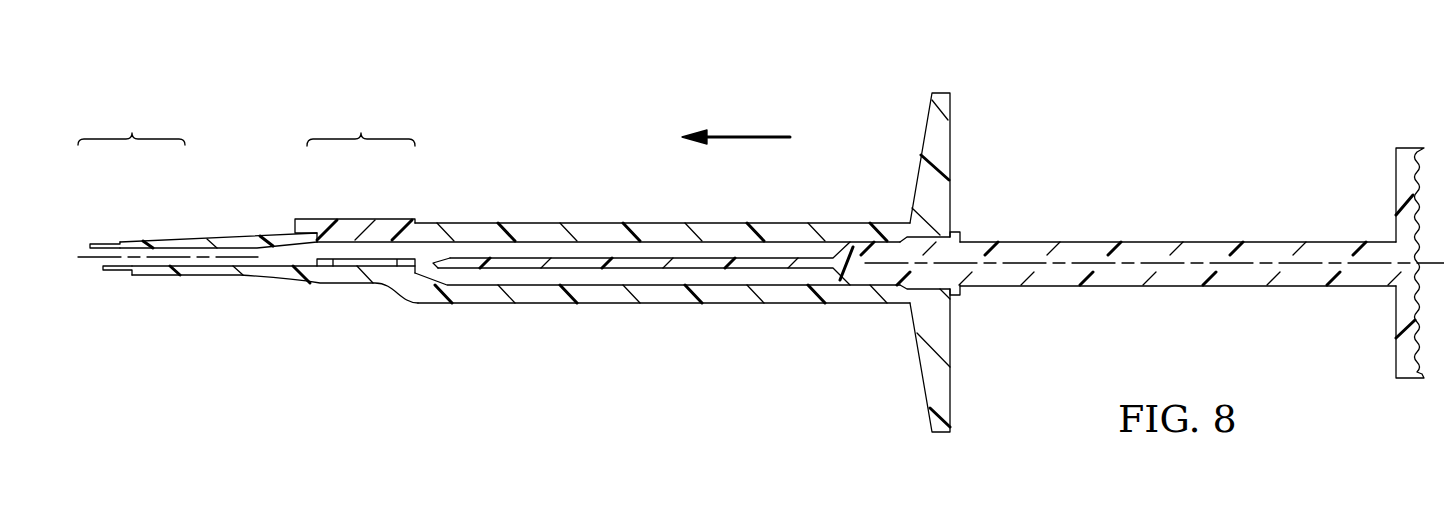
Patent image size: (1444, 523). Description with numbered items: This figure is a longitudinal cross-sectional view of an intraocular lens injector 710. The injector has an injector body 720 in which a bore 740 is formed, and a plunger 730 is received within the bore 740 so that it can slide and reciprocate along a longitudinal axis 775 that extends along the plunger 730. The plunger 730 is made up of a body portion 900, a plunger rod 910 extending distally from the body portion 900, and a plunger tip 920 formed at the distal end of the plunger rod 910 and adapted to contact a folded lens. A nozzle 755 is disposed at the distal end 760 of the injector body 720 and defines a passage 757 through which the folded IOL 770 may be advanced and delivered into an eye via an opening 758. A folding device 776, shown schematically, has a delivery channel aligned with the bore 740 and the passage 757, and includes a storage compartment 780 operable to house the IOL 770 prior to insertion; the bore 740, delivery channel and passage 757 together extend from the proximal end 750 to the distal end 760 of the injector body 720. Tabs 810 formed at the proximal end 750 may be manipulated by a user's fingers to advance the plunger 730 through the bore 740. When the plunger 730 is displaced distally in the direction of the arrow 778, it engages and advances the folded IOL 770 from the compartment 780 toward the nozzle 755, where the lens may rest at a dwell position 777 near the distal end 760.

The IOL injector 710 is at (1105, 84).
The injector body 720 is at (547, 301).
The plunger 730 is at (1150, 241).
The bore 740 is at (600, 250).
The proximal end 750 is at (952, 231).
The nozzle 755 is at (210, 276).
The passage 757 is at (262, 246).
The opening 758 is at (102, 265).
The distal end 760 is at (105, 243).
The IOL 770 is at (373, 257).
The longitudinal axis 775 is at (1050, 266).
The folding device 776 is at (361, 124).
The dwell position 777 is at (131, 122).
The arrow 778 is at (743, 135).
The storage compartment 780 is at (315, 212).
The tabs 810 is at (940, 143).
The body portion 900 is at (1175, 287).
The plunger rod 910 is at (637, 268).
The plunger tip 920 is at (437, 262).